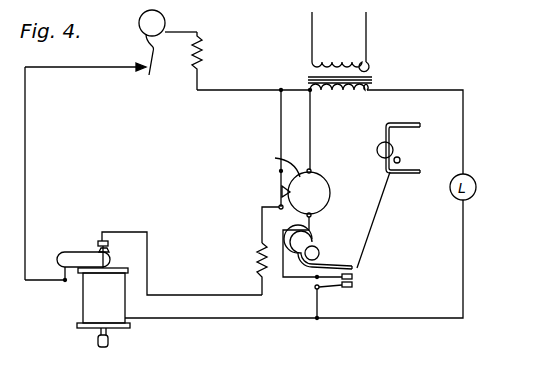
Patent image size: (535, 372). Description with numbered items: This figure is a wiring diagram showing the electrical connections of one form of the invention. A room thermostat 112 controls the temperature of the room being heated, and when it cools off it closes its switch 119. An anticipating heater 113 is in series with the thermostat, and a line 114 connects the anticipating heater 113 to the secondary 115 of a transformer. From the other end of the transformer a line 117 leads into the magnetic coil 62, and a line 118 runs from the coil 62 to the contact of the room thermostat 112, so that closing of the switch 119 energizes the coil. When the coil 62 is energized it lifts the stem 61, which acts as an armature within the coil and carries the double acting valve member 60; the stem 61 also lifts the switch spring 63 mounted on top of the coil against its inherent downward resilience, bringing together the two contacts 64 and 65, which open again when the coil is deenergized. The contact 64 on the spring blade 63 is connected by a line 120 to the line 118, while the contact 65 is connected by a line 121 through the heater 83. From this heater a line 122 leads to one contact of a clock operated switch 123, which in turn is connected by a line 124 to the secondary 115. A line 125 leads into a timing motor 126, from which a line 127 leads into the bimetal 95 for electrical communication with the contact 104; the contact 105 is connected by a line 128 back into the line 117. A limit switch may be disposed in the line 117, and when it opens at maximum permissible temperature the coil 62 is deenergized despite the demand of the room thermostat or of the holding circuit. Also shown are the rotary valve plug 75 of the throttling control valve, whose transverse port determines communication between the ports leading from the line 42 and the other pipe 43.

The line 42 is at (405, 125).
The pipe 43 is at (405, 174).
The double acting valve member 60 is at (110, 342).
The stem 61 is at (100, 260).
The magnetic coil 62 is at (95, 305).
The switch spring 63 is at (72, 252).
The contact 64 is at (109, 253).
The contact 65 is at (103, 235).
The rotary valve plug 75 is at (394, 150).
The heater 83 is at (258, 256).
The bimetal 95 is at (330, 262).
The contact 104 is at (353, 278).
The contact 105 is at (353, 287).
The room thermostat 112 is at (143, 32).
The anticipating heater 113 is at (203, 43).
The line 114 is at (230, 90).
The secondary 115 is at (367, 93).
The line 117 is at (464, 95).
The line 118 is at (27, 169).
The switch 119 is at (143, 76).
The line 120 is at (64, 279).
The line 121 is at (193, 295).
The line 122 is at (262, 207).
The clock operated switch 123 is at (281, 198).
The line 124 is at (280, 128).
The line 125 is at (310, 134).
The timing motor 126 is at (313, 188).
The line 127 is at (308, 223).
The line 128 is at (316, 303).